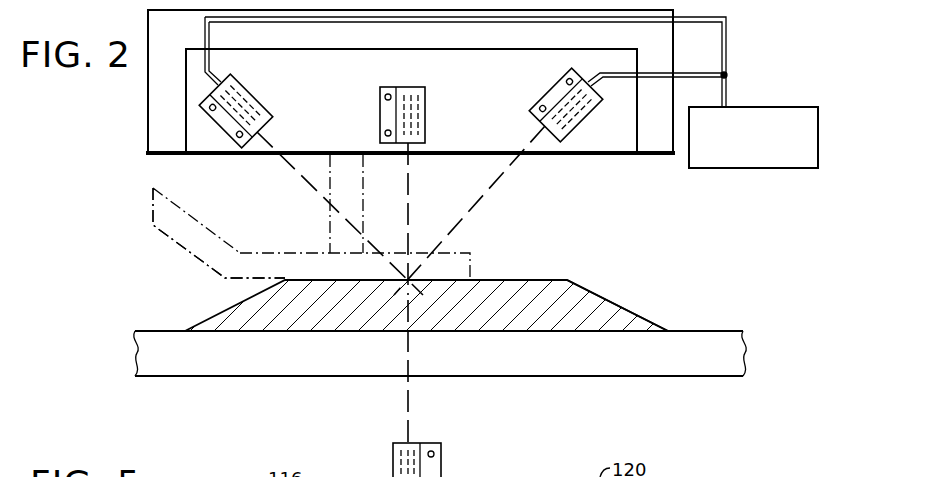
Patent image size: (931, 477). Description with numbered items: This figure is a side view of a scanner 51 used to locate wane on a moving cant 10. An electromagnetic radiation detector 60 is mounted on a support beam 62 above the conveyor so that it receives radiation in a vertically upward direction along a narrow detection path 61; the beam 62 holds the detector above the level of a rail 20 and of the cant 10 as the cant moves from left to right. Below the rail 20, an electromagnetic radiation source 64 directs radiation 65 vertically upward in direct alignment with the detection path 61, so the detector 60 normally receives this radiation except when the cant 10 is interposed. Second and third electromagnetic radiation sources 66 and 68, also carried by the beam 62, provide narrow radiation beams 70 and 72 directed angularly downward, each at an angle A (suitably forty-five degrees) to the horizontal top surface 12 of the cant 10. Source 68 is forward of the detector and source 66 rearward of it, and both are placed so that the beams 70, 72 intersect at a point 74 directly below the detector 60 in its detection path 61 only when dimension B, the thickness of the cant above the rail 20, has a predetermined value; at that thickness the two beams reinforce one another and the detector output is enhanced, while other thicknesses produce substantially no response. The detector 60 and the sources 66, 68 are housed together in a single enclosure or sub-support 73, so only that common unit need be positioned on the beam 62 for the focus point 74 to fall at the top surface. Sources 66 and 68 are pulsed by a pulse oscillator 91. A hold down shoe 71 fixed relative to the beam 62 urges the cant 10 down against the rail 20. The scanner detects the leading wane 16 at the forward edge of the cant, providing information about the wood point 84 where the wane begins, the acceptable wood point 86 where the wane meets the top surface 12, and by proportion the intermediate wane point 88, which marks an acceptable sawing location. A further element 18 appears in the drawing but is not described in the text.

The cant 10 is at (345, 311).
The top surface 12 is at (302, 276).
The leading wane 16 is at (633, 302).
The phantom workpiece position 18 is at (240, 288).
The rail 20 is at (183, 368).
The scanner 51 is at (243, 216).
The electromagnetic radiation detector 60 is at (425, 115).
The detection path 61 is at (408, 193).
The support beam 62 is at (677, 53).
The electromagnetic radiation source 64 is at (398, 458).
The radiation 65 is at (410, 390).
The second electromagnetic radiation source 66 is at (244, 110).
The third electromagnetic radiation source 68 is at (567, 98).
The radiation beam 70 is at (325, 197).
The hold down shoe 71 is at (393, 250).
The radiation beam 72 is at (507, 178).
The sub-support 73 is at (185, 80).
The point 74 is at (405, 284).
The wood point 84 is at (670, 331).
The acceptable wood point 86 is at (566, 280).
The wane point 88 is at (600, 297).
The pulse oscillator 91 is at (818, 138).
The angle A is at (502, 188).
The dimension B is at (483, 245).